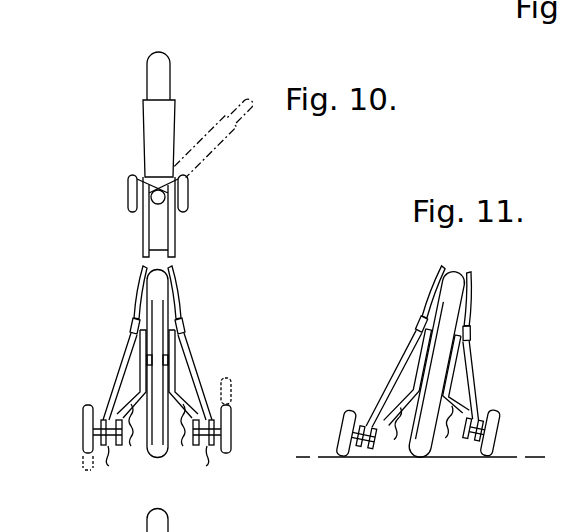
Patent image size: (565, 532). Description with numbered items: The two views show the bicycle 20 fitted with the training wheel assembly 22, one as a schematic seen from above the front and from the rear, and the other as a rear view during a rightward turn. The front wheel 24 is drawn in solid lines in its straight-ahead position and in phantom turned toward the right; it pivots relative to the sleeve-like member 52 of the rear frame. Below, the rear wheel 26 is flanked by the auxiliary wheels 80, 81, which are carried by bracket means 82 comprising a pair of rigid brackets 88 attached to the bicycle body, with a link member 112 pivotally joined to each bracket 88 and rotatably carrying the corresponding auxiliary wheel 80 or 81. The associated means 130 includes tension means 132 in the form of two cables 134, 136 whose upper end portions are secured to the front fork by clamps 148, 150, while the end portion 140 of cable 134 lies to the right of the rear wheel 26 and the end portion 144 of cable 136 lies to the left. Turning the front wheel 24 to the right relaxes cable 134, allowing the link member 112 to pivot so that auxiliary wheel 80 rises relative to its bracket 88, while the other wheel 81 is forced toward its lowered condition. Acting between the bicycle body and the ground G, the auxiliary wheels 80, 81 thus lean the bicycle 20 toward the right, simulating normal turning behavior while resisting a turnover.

In FIG. 10, the bicycle 20 is at (106, 107).
In FIG. 11, the bicycle 20 is at (358, 277).
In FIG. 10, the training wheel assembly 22 is at (92, 323).
In FIG. 11, the training wheel assembly 22 is at (358, 321).
In FIG. 10, the front wheel 24 is at (160, 52).
In FIG. 10, the rear wheel 26 is at (157, 459).
In FIG. 11, the rear wheel 26 is at (418, 460).
In FIG. 10, the sleeve-like member 52 is at (158, 183).
In FIG. 10, the auxiliary wheel 80 is at (236, 378).
In FIG. 11, the auxiliary wheel 80 is at (499, 416).
In FIG. 10, the auxiliary wheel 81 is at (85, 410).
In FIG. 11, the auxiliary wheel 81 is at (342, 426).
In FIG. 10, the bracket means 82 is at (114, 380).
In FIG. 11, the bracket means 82 is at (388, 379).
In FIG. 10, the rigid bracket 88 is at (155, 436).
In FIG. 11, the rigid bracket 88 is at (416, 426).
In FIG. 10, the link member 112 is at (163, 468).
In FIG. 10, the associated means 130 is at (182, 273).
In FIG. 11, the associated means 130 is at (486, 287).
In FIG. 10, the tension means 132 is at (133, 273).
In FIG. 11, the tension means 132 is at (432, 278).
In FIG. 10, the cable 134 is at (192, 354).
In FIG. 11, the cable 134 is at (478, 369).
In FIG. 10, the cable 136 is at (139, 357).
In FIG. 11, the cable 136 is at (398, 349).
In FIG. 10, the end portion 140 is at (218, 400).
In FIG. 10, the end portion 144 is at (91, 407).
In FIG. 10, the clamp 148 is at (188, 195).
In FIG. 10, the clamp 150 is at (128, 191).
In FIG. 11, the ground G is at (503, 456).